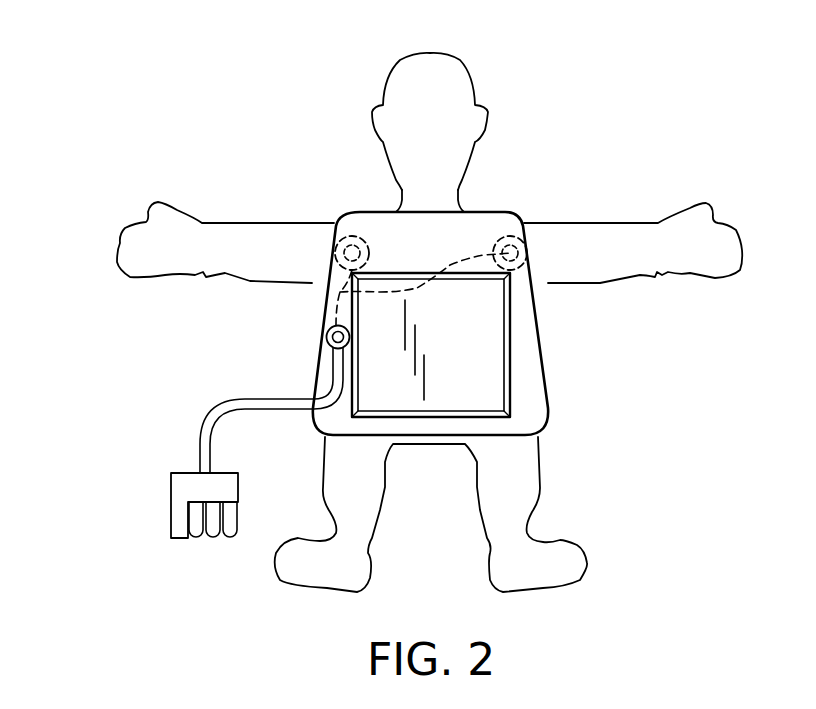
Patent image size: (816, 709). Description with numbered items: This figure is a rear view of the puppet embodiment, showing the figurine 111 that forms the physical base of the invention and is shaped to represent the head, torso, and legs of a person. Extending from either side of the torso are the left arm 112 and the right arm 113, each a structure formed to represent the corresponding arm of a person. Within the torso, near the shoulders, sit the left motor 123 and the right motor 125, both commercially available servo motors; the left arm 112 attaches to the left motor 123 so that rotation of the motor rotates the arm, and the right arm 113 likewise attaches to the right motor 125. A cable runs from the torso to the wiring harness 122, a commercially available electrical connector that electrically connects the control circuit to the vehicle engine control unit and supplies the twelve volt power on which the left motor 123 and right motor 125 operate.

The figurine 111 is at (452, 149).
The left arm 112 is at (249, 237).
The right arm 113 is at (589, 252).
The wiring harness 122 is at (171, 493).
The left motor 123 is at (352, 253).
The right motor 125 is at (510, 253).